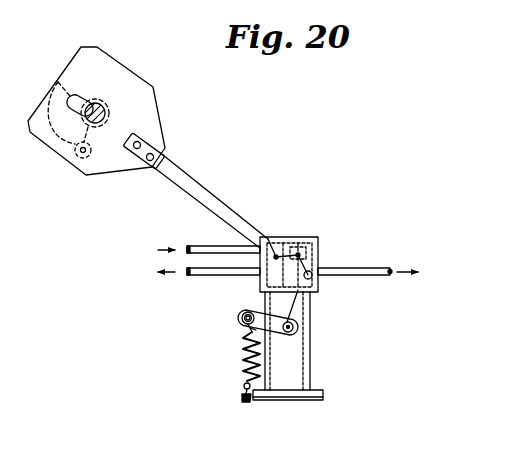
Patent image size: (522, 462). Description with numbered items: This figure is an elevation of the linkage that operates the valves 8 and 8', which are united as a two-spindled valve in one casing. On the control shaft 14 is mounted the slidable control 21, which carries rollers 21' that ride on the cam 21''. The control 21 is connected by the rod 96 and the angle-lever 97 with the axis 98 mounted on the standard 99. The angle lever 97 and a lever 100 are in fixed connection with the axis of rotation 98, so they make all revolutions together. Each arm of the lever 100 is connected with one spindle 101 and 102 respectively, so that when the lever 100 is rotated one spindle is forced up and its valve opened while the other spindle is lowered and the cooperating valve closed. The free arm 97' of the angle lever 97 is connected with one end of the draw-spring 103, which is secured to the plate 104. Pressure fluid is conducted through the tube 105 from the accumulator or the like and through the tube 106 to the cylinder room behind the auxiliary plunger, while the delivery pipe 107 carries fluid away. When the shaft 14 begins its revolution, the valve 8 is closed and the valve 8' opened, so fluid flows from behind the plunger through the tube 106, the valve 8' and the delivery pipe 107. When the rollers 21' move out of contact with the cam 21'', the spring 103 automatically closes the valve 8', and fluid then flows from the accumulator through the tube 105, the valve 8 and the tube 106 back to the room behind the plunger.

The slidable control 21 is at (96, 110).
The shaft 14 is at (105, 108).
The cam 21'' is at (52, 124).
The rollers 21' is at (66, 166).
The rod 96 is at (200, 188).
The valve 8 is at (289, 250).
The valve 8' is at (316, 245).
The tube 105 is at (208, 247).
The tube 106 is at (205, 276).
The delivery pipe 107 is at (350, 268).
The spindle 102 is at (307, 302).
The angle-lever 97 is at (292, 320).
The free arm 97' is at (222, 328).
The axis 98 is at (300, 327).
The spindle 101 is at (242, 311).
The lever 100 is at (252, 330).
The draw-spring 103 is at (247, 355).
The standard 99 is at (310, 360).
The plate 104 is at (287, 398).